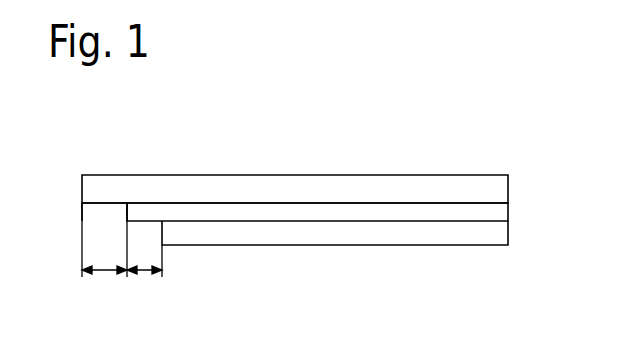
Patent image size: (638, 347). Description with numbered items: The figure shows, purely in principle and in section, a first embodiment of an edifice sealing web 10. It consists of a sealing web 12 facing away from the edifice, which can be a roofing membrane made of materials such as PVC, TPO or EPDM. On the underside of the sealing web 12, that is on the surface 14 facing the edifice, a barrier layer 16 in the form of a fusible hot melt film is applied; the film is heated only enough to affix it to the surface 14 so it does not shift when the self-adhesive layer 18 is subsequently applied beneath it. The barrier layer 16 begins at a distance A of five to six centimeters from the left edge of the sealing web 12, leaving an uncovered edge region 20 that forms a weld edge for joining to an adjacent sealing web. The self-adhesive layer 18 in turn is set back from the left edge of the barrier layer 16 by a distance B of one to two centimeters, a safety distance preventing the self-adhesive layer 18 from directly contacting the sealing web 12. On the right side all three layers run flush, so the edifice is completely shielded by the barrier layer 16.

The edifice sealing web 10 is at (485, 128).
The sealing web 12 is at (303, 185).
The surface 14 is at (377, 202).
The barrier layer 16 is at (497, 212).
The self-adhesive layer 18 is at (498, 234).
The edge region 20 is at (107, 204).
The distance A is at (98, 272).
The distance B is at (150, 272).